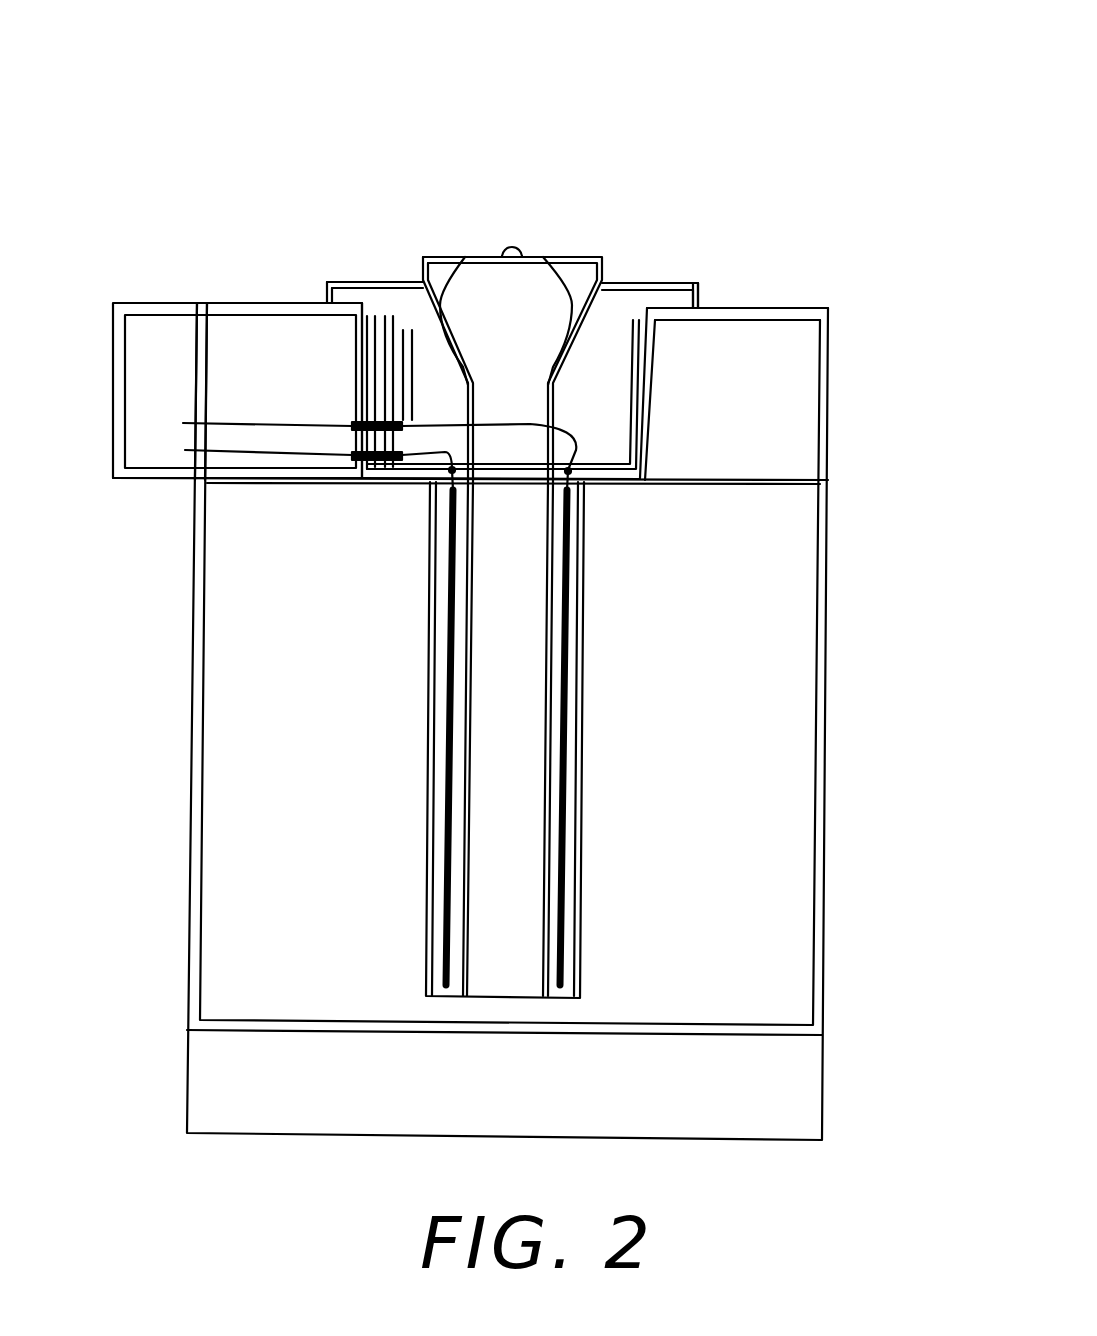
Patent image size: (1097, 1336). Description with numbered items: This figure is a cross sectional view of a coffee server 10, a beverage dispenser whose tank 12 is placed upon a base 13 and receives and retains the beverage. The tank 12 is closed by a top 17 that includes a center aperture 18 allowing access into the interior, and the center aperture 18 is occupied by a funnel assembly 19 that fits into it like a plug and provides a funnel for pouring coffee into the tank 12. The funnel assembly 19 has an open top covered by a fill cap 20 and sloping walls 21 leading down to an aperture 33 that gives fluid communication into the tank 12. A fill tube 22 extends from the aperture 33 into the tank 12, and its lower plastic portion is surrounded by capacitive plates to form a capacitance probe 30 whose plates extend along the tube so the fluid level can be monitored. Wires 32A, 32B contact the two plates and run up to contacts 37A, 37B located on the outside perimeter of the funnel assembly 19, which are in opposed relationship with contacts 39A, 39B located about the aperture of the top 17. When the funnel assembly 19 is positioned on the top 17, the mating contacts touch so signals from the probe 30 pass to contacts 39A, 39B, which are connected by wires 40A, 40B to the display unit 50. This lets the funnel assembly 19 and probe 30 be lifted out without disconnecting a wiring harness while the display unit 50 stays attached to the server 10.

The coffee server 10 is at (690, 112).
The tank 12 is at (750, 650).
The base 13 is at (640, 327).
The top 17 is at (793, 393).
The center aperture 18 is at (603, 487).
The funnel assembly 19 is at (677, 283).
The fill cap 20 is at (583, 257).
The sloping walls 21 is at (465, 257).
The fill tube 22 is at (555, 412).
The capacitance probe 30 is at (573, 831).
The wire 32A is at (403, 330).
The wire 32B is at (416, 483).
The aperture 33 is at (485, 488).
The contact 37A is at (392, 340).
The contact 37B is at (391, 468).
The contact 39A is at (360, 418).
The contact 39B is at (357, 470).
The wire 40A is at (218, 407).
The wire 40B is at (230, 462).
The display unit 50 is at (152, 340).